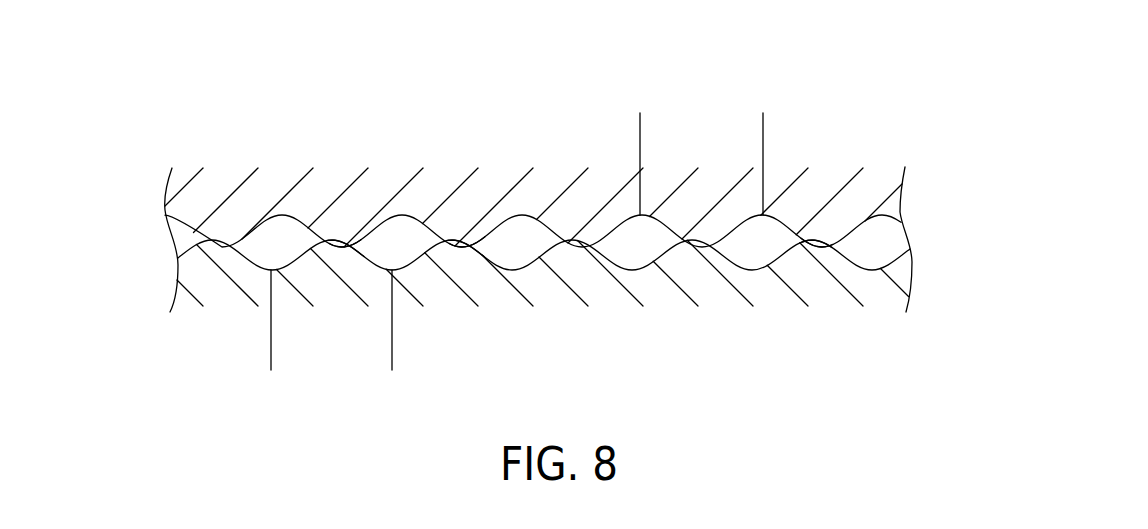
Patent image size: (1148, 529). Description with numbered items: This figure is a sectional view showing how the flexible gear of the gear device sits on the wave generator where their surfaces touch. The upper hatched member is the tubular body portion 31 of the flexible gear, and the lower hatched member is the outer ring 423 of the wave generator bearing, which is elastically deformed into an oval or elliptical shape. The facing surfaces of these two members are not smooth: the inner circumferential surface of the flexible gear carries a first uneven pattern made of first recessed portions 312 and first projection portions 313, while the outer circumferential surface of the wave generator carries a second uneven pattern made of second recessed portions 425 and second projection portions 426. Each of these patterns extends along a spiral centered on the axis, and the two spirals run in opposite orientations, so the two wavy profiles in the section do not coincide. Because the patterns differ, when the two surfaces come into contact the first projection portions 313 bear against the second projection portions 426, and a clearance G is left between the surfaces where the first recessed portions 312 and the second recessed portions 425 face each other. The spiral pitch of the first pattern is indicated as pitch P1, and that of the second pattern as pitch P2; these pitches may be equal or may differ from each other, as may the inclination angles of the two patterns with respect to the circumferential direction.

The body portion 31 is at (822, 188).
The first recessed portions 312 is at (518, 215).
The first projection portions 313 is at (342, 245).
The outer ring 423 is at (823, 283).
The second recessed portions 425 is at (634, 268).
The second projection portions 426 is at (461, 246).
The clearance G is at (883, 238).
The pitch of the spiral of the first uneven pattern P1 is at (763, 128).
The pitch of the spiral of the second uneven pattern P2 is at (392, 355).